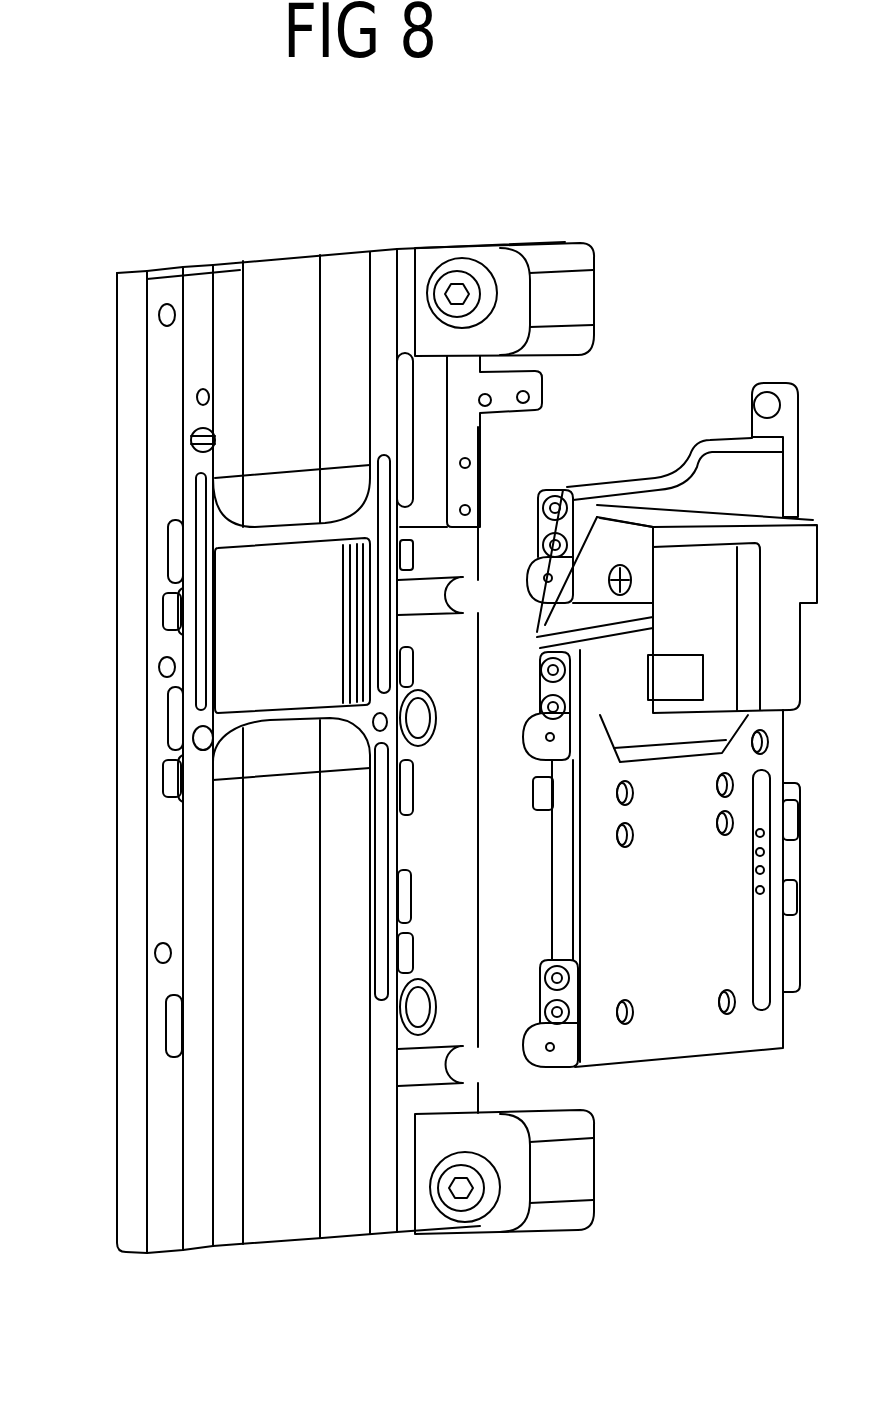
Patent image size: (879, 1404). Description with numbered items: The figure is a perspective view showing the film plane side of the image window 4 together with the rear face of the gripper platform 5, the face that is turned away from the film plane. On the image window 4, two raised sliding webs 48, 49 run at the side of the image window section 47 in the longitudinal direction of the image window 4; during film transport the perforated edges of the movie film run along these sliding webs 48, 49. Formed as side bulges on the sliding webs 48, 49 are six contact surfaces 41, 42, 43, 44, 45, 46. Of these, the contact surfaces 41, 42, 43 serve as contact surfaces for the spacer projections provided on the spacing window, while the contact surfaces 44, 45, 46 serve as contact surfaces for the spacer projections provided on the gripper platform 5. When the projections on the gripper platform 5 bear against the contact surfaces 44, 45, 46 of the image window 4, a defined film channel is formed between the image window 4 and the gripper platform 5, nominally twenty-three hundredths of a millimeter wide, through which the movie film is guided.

The image window 4 is at (265, 1213).
The gripper platform 5 is at (683, 1027).
The contact surface 41 is at (405, 498).
The contact surface 42 is at (400, 667).
The contact surface 43 is at (160, 608).
The contact surface 44 is at (410, 551).
The contact surface 45 is at (407, 947).
The contact surface 46 is at (160, 788).
The image window section 47 is at (243, 675).
The sliding web 48 is at (200, 1167).
The sliding web 49 is at (387, 1167).